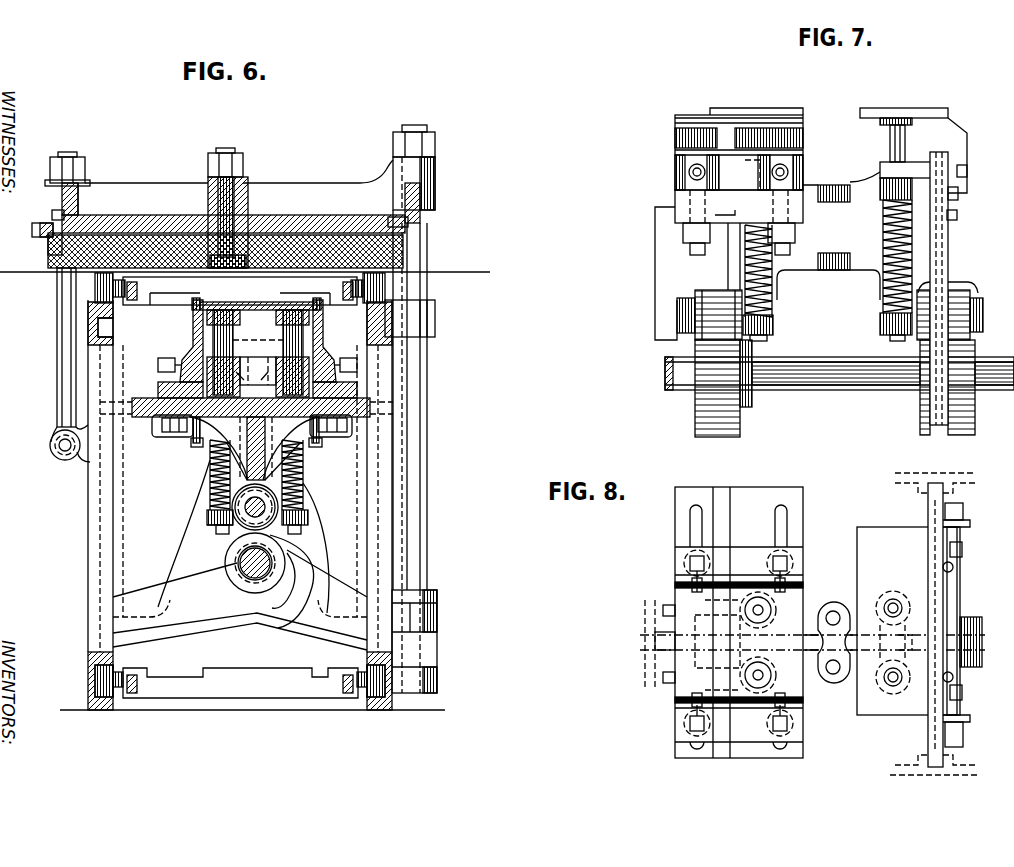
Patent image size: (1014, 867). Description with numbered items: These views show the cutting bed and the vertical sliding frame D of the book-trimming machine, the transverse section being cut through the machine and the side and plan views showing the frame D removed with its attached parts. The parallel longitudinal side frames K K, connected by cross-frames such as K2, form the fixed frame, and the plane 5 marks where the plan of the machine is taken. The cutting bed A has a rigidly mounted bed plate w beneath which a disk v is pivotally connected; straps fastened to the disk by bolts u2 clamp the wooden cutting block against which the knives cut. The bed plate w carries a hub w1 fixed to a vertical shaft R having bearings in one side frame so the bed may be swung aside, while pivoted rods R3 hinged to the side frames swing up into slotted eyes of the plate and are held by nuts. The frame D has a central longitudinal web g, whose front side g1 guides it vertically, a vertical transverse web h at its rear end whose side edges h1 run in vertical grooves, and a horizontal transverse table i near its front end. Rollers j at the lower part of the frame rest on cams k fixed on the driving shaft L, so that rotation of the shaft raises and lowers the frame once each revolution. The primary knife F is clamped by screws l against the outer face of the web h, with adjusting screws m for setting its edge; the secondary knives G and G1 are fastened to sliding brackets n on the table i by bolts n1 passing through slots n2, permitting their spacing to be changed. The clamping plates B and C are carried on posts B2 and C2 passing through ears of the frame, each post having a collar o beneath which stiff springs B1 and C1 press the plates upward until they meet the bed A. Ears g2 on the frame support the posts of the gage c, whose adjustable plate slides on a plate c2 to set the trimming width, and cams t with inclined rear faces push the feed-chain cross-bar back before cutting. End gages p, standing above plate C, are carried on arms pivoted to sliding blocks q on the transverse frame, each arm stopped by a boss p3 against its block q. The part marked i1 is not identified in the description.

In FIG. 6, the cutting bed A is at (235, 187).
In FIG. 6, the bed plate w is at (233, 213).
In FIG. 6, the hub or boss w1 is at (435, 178).
In FIG. 6, the boss p3 is at (85, 171).
In FIG. 6, the bolts u2 is at (52, 214).
In FIG. 6, the disk v is at (32, 228).
In FIG. 6, the section line 5— 5 is at (245, 262).
In FIG. 6, the end guides or gages p is at (200, 302).
In FIG. 6, the knife G is at (190, 325).
In FIG. 8, the knife G is at (675, 584).
In FIG. 6, the knife G1 is at (324, 326).
In FIG. 7, the knife G1 is at (680, 136).
In FIG. 6, the clamping plate C is at (258, 349).
In FIG. 7, the clamping plate C is at (739, 140).
In FIG. 8, the clamping plate C is at (745, 642).
In FIG. 6, the gage c is at (252, 369).
In FIG. 6, the sliding brackets n is at (158, 391).
In FIG. 7, the sliding brackets n is at (739, 172).
In FIG. 8, the sliding brackets n is at (742, 644).
In FIG. 6, the pivoted rods or bars R3 is at (57, 366).
In FIG. 6, the vertical shaft R is at (428, 433).
In FIG. 6, the sliding blocks q is at (247, 430).
In FIG. 6, the sliding frame D is at (252, 440).
In FIG. 7, the sliding frame D is at (655, 258).
In FIG. 8, the sliding frame D is at (748, 604).
In FIG. 6, the springs C1 is at (210, 478).
In FIG. 7, the springs C1 is at (778, 281).
In FIG. 6, the vertical bars or posts C2 is at (303, 482).
In FIG. 7, the vertical bars or posts C2 is at (770, 338).
In FIG. 6, the plate c2 is at (207, 527).
In FIG. 6, the vertical transverse web h is at (240, 538).
In FIG. 7, the vertical transverse web h is at (948, 255).
In FIG. 8, the vertical transverse web h is at (933, 730).
In FIG. 6, the side frames K is at (436, 543).
In FIG. 6, the driving shaft L is at (240, 562).
In FIG. 7, the driving shaft L is at (839, 381).
In FIG. 6, the cams k is at (305, 553).
In FIG. 7, the cams k is at (740, 428).
In FIG. 6, the cross-frame K2 is at (240, 600).
In FIG. 7, the clamping plate B is at (904, 101).
In FIG. 8, the clamping plate B is at (919, 621).
In FIG. 7, the springs B1 is at (883, 234).
In FIG. 7, the vertical bars or posts B2 is at (888, 148).
In FIG. 7, the collar o is at (880, 190).
In FIG. 7, the primary trimming knife F is at (960, 150).
In FIG. 8, the primary trimming knife F is at (952, 590).
In FIG. 7, the cams t is at (958, 128).
In FIG. 8, the cams t is at (970, 525).
In FIG. 7, the screws l is at (967, 173).
In FIG. 8, the screws l is at (962, 548).
In FIG. 7, the adjusting screws m is at (957, 215).
In FIG. 8, the adjusting screws m is at (953, 567).
In FIG. 7, the central longitudinal web g is at (771, 256).
In FIG. 8, the central longitudinal web g is at (812, 644).
In FIG. 7, the front side of web g1 is at (655, 300).
In FIG. 8, the front side of web g1 is at (660, 643).
In FIG. 7, the ears g2 is at (842, 284).
In FIG. 8, the ears g2 is at (830, 606).
In FIG. 7, the horizontal transverse table i is at (680, 207).
In FIG. 8, the horizontal transverse table i is at (758, 776).
In FIG. 8, the stud i1 is at (676, 610).
In FIG. 7, the bolts n1 is at (705, 240).
In FIG. 8, the bolts n1 is at (685, 562).
In FIG. 8, the slots n2 is at (693, 525).
In FIG. 7, the rollers j is at (695, 295).
In FIG. 8, the side edges h1 is at (935, 490).